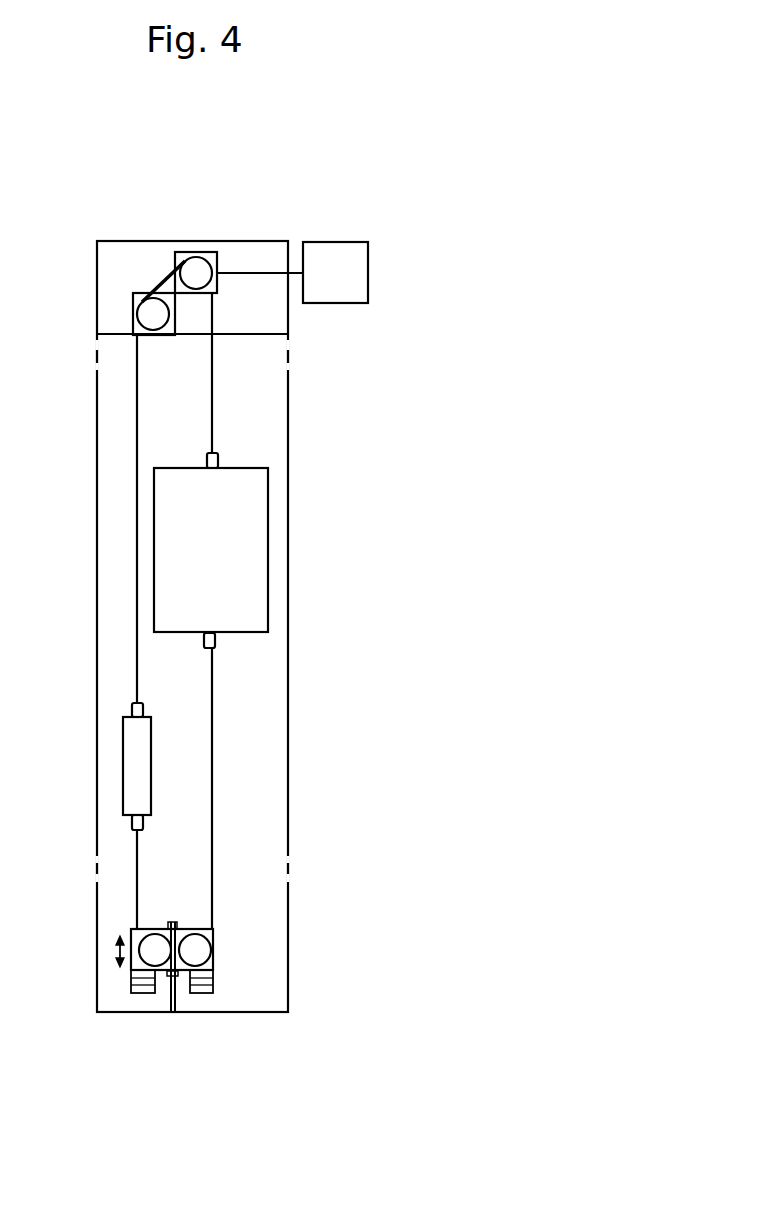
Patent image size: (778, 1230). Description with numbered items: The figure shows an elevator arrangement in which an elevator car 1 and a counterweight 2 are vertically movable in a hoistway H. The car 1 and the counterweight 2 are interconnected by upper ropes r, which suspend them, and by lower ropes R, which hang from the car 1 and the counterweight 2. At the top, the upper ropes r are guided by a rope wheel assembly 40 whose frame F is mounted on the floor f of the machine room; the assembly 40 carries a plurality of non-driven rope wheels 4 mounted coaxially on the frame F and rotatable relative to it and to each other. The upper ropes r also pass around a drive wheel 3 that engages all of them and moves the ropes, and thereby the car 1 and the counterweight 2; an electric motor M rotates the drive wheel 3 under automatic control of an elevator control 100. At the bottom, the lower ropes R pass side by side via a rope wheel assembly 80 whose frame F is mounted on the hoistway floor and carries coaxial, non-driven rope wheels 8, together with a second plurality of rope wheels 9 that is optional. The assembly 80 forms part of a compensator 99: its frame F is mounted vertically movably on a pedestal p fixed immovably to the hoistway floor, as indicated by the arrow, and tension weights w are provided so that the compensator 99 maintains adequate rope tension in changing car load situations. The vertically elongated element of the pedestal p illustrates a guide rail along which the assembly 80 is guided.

The elevator car 1 is at (217, 567).
The counterweight 2 is at (132, 747).
The drive wheel 3 is at (202, 267).
The rope wheels 4 is at (153, 322).
The rope wheels 8 is at (158, 947).
The rope wheels 9 is at (195, 950).
The rope wheel assembly 40 is at (153, 292).
The rope wheel assembly 80 is at (131, 975).
The compensator 99 is at (230, 915).
The elevator control 100 is at (325, 240).
The electric motor M is at (188, 251).
The frame F is at (175, 303).
The floor of the machine room f is at (258, 336).
The hoistway H is at (192, 626).
The upper ropes r is at (125, 471).
The lower ropes R is at (216, 756).
The tension weights w is at (140, 995).
The pedestal p is at (170, 992).